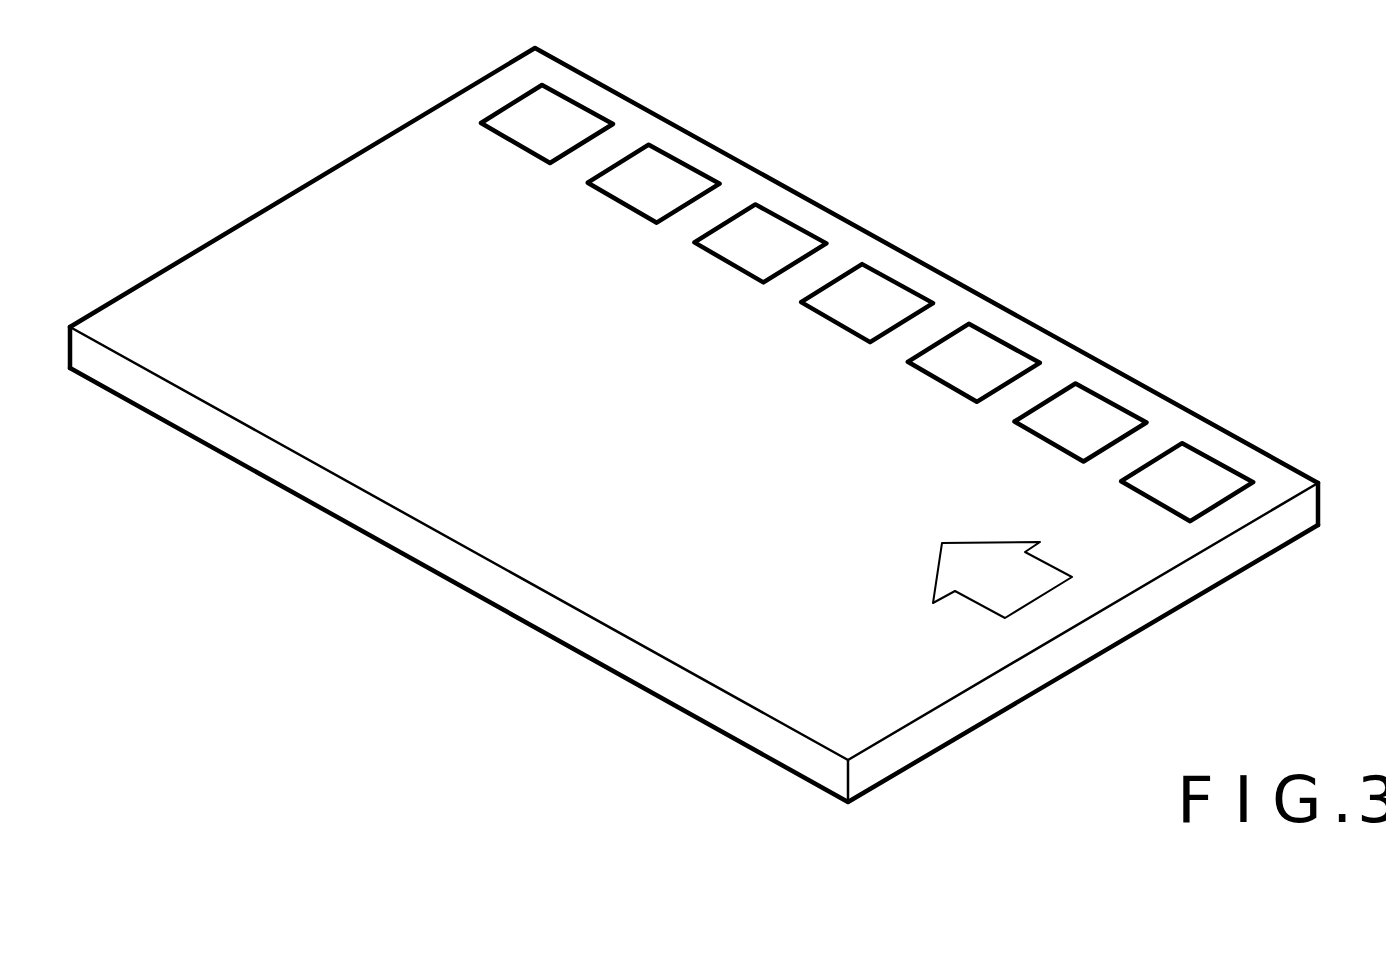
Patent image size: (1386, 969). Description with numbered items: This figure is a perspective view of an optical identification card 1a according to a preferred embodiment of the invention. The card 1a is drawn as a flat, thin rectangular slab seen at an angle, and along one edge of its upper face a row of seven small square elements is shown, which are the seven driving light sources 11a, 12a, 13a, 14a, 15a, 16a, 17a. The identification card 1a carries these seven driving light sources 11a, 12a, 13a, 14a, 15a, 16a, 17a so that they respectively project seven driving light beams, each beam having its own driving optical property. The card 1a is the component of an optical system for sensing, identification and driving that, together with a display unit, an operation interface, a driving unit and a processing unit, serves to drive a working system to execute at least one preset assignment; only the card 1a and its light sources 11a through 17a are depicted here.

The optical identification card 1a is at (1264, 252).
The driving light source 11a is at (564, 108).
The driving light source 12a is at (671, 168).
The driving light source 13a is at (777, 227).
The driving light source 14a is at (884, 287).
The driving light source 15a is at (991, 347).
The driving light source 16a is at (1098, 406).
The driving light source 17a is at (1204, 466).